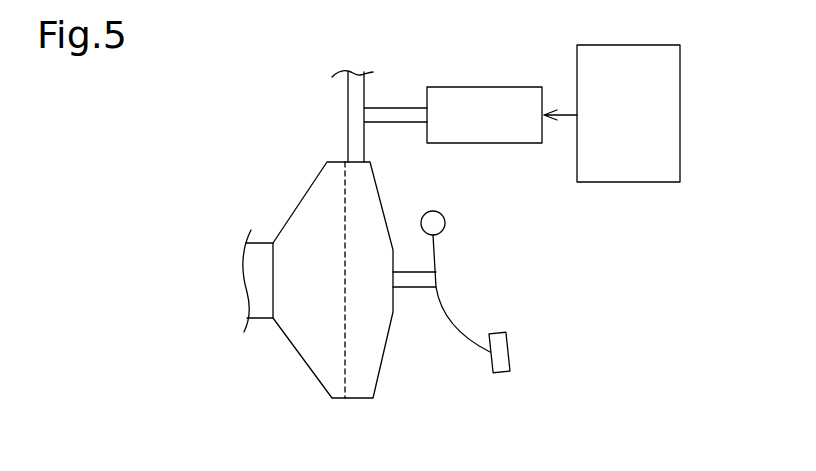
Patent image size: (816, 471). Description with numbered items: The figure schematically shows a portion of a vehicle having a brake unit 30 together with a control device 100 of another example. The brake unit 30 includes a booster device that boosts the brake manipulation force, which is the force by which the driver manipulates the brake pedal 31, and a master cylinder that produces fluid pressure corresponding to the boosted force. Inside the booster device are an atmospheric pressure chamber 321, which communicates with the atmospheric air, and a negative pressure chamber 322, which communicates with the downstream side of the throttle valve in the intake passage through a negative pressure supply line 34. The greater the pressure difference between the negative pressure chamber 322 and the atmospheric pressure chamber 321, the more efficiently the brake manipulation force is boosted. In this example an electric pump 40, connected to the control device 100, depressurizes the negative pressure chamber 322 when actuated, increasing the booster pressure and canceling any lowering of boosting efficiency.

The brake unit 30 is at (331, 311).
The brake pedal 31 is at (512, 352).
The negative pressure supply line 34 is at (348, 113).
The electric pump 40 is at (497, 86).
The control device 100 is at (617, 45).
The atmospheric pressure chamber 321 is at (332, 352).
The negative pressure chamber 322 is at (360, 352).